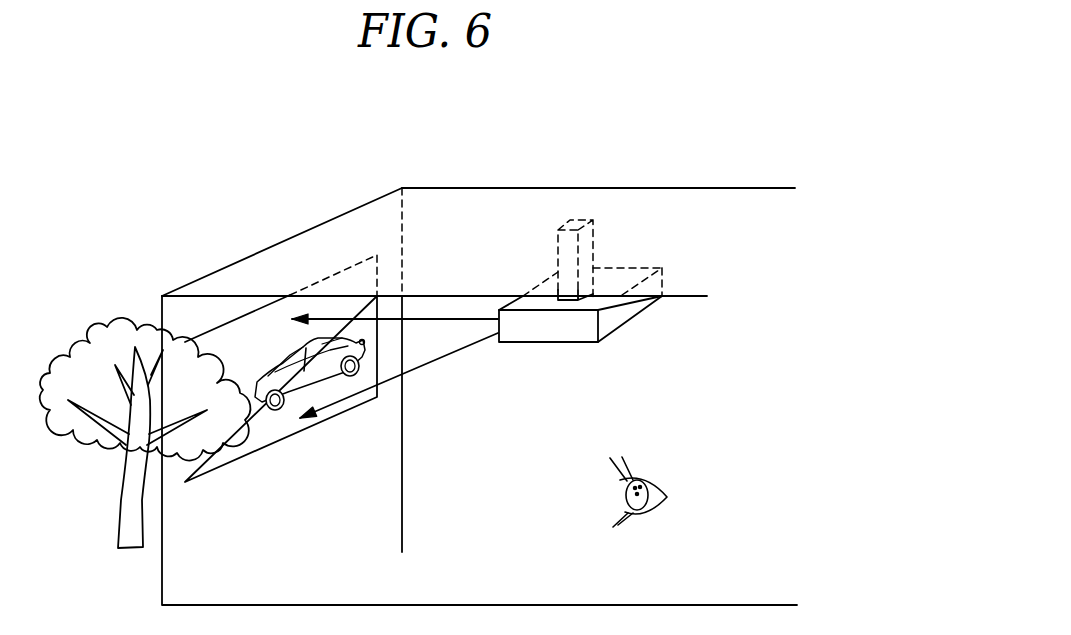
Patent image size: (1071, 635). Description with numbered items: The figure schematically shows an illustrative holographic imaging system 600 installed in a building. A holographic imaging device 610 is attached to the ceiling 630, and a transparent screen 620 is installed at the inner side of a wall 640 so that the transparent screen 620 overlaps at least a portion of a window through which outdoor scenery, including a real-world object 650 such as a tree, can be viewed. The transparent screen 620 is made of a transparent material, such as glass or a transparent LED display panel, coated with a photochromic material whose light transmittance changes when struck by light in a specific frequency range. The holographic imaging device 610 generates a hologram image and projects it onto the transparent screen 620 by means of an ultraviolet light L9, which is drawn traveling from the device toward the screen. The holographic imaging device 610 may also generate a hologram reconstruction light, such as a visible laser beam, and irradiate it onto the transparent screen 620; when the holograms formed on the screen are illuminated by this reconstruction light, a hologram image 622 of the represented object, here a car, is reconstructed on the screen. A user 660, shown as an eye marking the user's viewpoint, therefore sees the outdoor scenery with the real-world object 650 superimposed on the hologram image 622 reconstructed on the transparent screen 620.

The holographic imaging system 600 is at (523, 157).
The holographic imaging device 610 is at (565, 342).
The transparent screen 620 is at (287, 437).
The hologram image 622 is at (290, 357).
The ceiling 630 is at (718, 197).
The wall 640 is at (390, 460).
The real-world object 650 is at (117, 327).
The user 660 is at (657, 480).
The ultraviolet light L9 is at (443, 357).